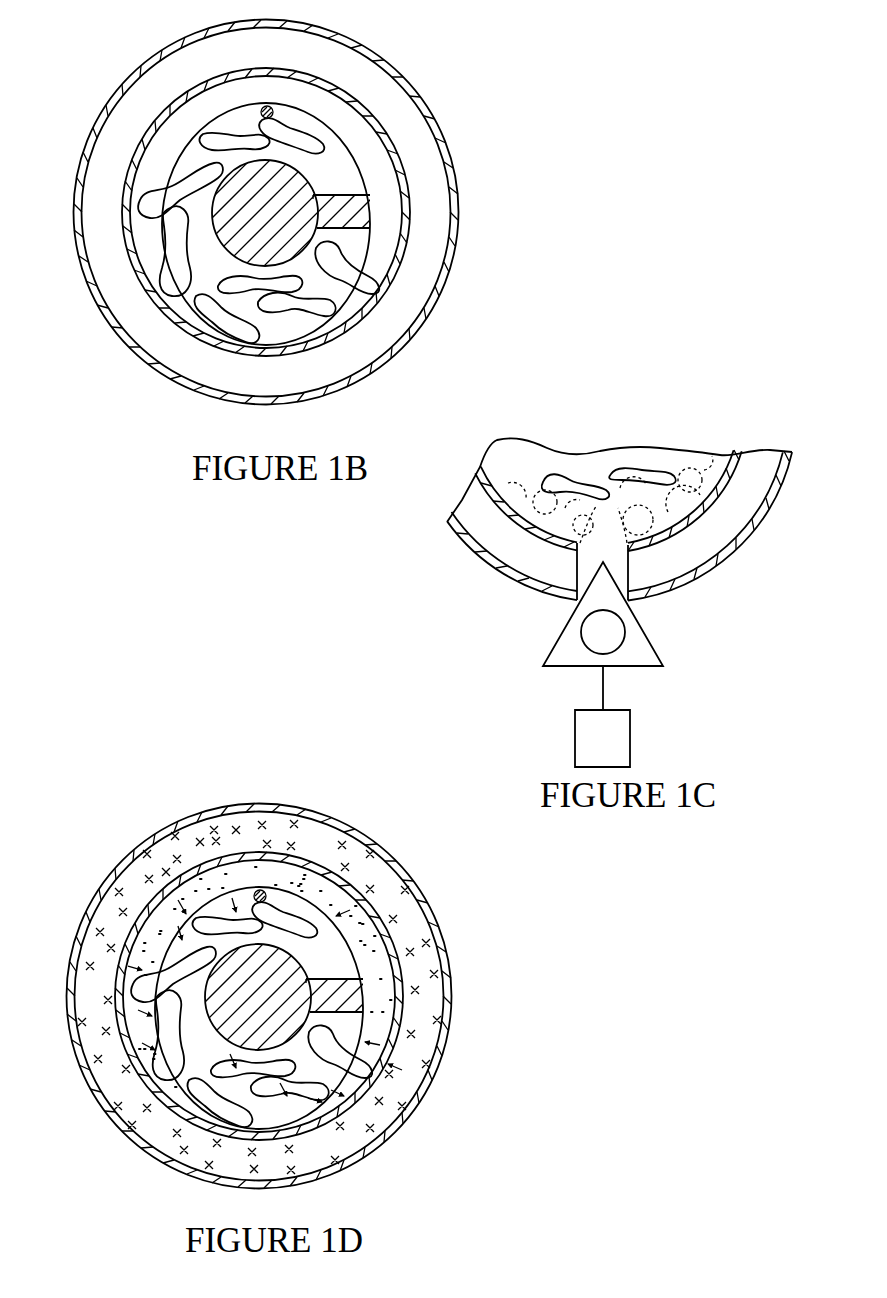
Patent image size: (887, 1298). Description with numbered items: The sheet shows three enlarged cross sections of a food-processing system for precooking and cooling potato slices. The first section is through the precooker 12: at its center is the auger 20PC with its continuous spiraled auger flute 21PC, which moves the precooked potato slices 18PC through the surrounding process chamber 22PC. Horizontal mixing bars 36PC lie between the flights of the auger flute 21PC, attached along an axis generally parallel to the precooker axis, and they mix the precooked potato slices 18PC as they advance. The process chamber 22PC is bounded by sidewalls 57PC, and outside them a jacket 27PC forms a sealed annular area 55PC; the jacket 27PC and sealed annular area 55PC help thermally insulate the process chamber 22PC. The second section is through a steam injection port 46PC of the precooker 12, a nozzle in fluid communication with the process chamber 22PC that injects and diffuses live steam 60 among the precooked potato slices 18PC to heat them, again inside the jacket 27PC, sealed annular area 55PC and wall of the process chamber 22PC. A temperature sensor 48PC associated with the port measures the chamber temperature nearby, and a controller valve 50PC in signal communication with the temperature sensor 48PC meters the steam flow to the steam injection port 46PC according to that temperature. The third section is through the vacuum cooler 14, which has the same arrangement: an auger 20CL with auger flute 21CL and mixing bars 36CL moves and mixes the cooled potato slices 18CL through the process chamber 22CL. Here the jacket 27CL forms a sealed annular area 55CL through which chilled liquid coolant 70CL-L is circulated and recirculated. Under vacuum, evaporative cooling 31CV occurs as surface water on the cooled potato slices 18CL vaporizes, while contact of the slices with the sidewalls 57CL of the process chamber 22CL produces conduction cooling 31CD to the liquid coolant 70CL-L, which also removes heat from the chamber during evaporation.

In FIG. 1B, the precooker 12 is at (137, 357).
In FIG. 1C, the precooker 12 is at (537, 593).
In FIG. 1D, the vacuum cooler 14 is at (133, 1133).
In FIG. 1B, the precooked potato slices 18PC is at (312, 276).
In FIG. 1C, the precooked potato slices 18PC is at (557, 477).
In FIG. 1D, the cooled potato slices 18CL is at (305, 1055).
In FIG. 1B, the auger 20PC is at (290, 183).
In FIG. 1D, the auger 20CL is at (290, 967).
In FIG. 1B, the auger flute 21PC is at (357, 213).
In FIG. 1D, the auger flute 21CL is at (350, 993).
In FIG. 1B, the process chamber 22PC is at (356, 100).
In FIG. 1C, the process chamber 22PC is at (693, 452).
In FIG. 1D, the process chamber 22CL is at (272, 853).
In FIG. 1B, the jacket 27PC is at (450, 265).
In FIG. 1C, the jacket 27PC is at (713, 570).
In FIG. 1D, the jacket 27CL is at (443, 1062).
In FIG. 1B, the mixing bars 36PC is at (270, 106).
In FIG. 1D, the mixing bars 36CL is at (263, 890).
In FIG. 1C, the steam injection port 46PC is at (653, 640).
In FIG. 1C, the temperature sensor 48PC is at (614, 650).
In FIG. 1C, the controller valve 50PC is at (587, 737).
In FIG. 1B, the sealed annular area 55PC is at (428, 232).
In FIG. 1C, the sealed annular area 55PC is at (735, 515).
In FIG. 1D, the sealed annular area 55CL is at (408, 918).
In FIG. 1B, the sidewalls 57PC is at (362, 196).
In FIG. 1D, the sidewalls 57CL is at (385, 1024).
In FIG. 1C, the live steam 60 is at (573, 523).
In FIG. 1D, the liquid coolant 70CL-L is at (238, 830).
In FIG. 1D, the evaporative cooling 31CV is at (180, 968).
In FIG. 1D, the conduction cooling 31CD is at (397, 1068).